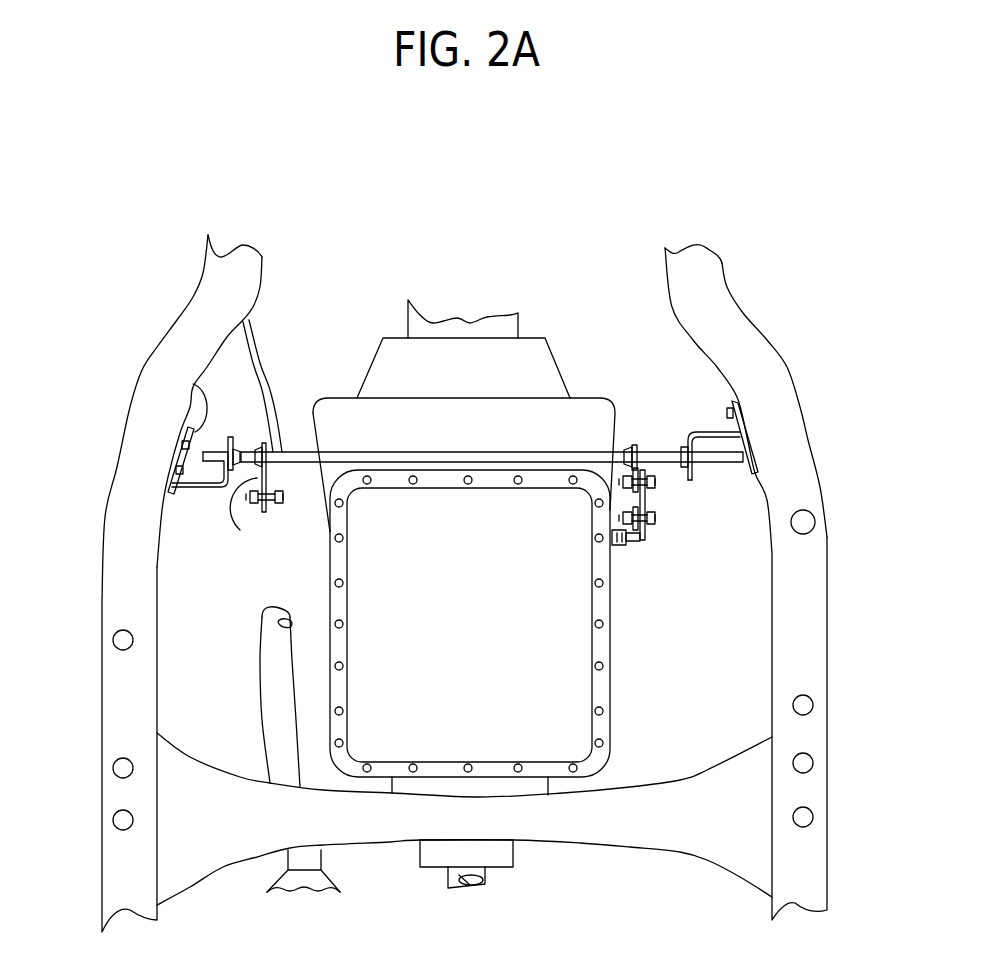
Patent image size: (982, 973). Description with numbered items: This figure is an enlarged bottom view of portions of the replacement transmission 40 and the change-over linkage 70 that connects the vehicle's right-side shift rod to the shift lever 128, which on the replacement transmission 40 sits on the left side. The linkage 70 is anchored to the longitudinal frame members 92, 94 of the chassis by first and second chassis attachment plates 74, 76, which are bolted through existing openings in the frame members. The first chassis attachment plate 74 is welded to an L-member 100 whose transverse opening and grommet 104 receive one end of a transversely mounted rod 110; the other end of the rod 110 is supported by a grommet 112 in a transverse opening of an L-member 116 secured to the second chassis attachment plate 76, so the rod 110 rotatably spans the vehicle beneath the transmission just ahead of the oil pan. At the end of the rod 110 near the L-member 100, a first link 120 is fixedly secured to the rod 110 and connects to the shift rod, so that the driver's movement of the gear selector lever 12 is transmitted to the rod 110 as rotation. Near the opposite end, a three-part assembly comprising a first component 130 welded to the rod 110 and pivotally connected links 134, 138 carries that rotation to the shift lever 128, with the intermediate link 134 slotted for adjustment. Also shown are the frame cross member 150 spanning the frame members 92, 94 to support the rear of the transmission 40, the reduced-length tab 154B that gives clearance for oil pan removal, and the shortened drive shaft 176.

The longitudinal frame member 92 is at (192, 322).
The longitudinal frame member 94 is at (737, 318).
The gear selector lever 12 is at (253, 337).
The first chassis attachment plate 74 is at (208, 402).
The replacement transmission 40 is at (527, 355).
The rod 110 is at (297, 452).
The grommet 104 is at (227, 457).
The L-member 100 is at (203, 482).
The first link 120 is at (257, 494).
The change-over linkage 70 is at (660, 444).
The first component 130 is at (620, 462).
The intermediate link 134 is at (647, 500).
The link 138 is at (637, 538).
The shift lever 128 is at (623, 547).
The L-member 116 is at (710, 427).
The grommet 112 is at (697, 460).
The second chassis attachment plate 76 is at (757, 460).
The frame cross member 150 is at (383, 838).
The tab 154B is at (533, 787).
The drive shaft 176 is at (463, 887).